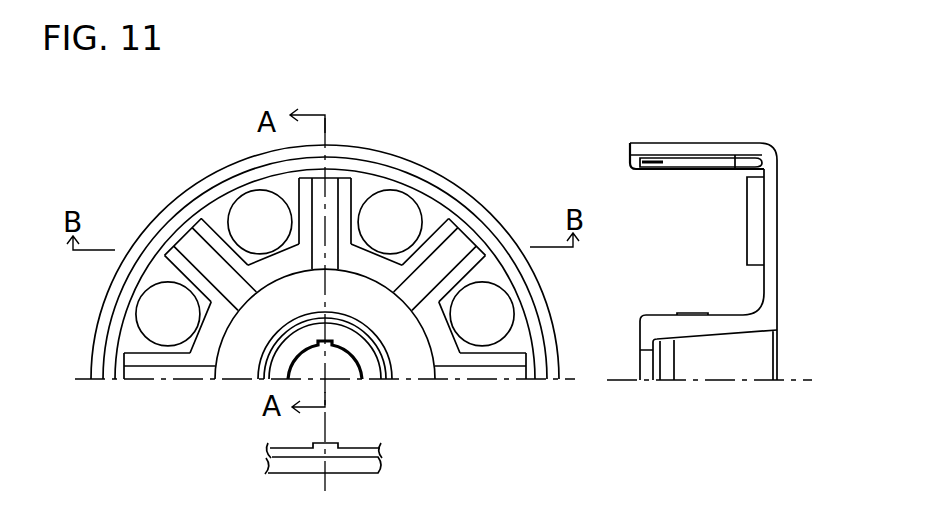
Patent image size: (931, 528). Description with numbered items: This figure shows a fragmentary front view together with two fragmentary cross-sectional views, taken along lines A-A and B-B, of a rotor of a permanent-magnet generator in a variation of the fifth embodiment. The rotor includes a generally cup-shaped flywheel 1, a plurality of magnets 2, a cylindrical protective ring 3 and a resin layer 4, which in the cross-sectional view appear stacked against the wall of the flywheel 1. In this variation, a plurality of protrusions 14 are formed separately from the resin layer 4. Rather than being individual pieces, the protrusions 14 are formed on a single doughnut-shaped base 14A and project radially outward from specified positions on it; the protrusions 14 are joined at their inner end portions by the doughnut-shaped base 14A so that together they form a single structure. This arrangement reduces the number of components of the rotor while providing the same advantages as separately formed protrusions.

The flywheel 1 is at (773, 158).
The magnets 2 is at (707, 161).
The cylindrical protective ring 3 is at (670, 166).
The resin layer 4 is at (752, 162).
The protrusions 14 is at (335, 220).
The doughnut-shaped base 14A is at (357, 455).